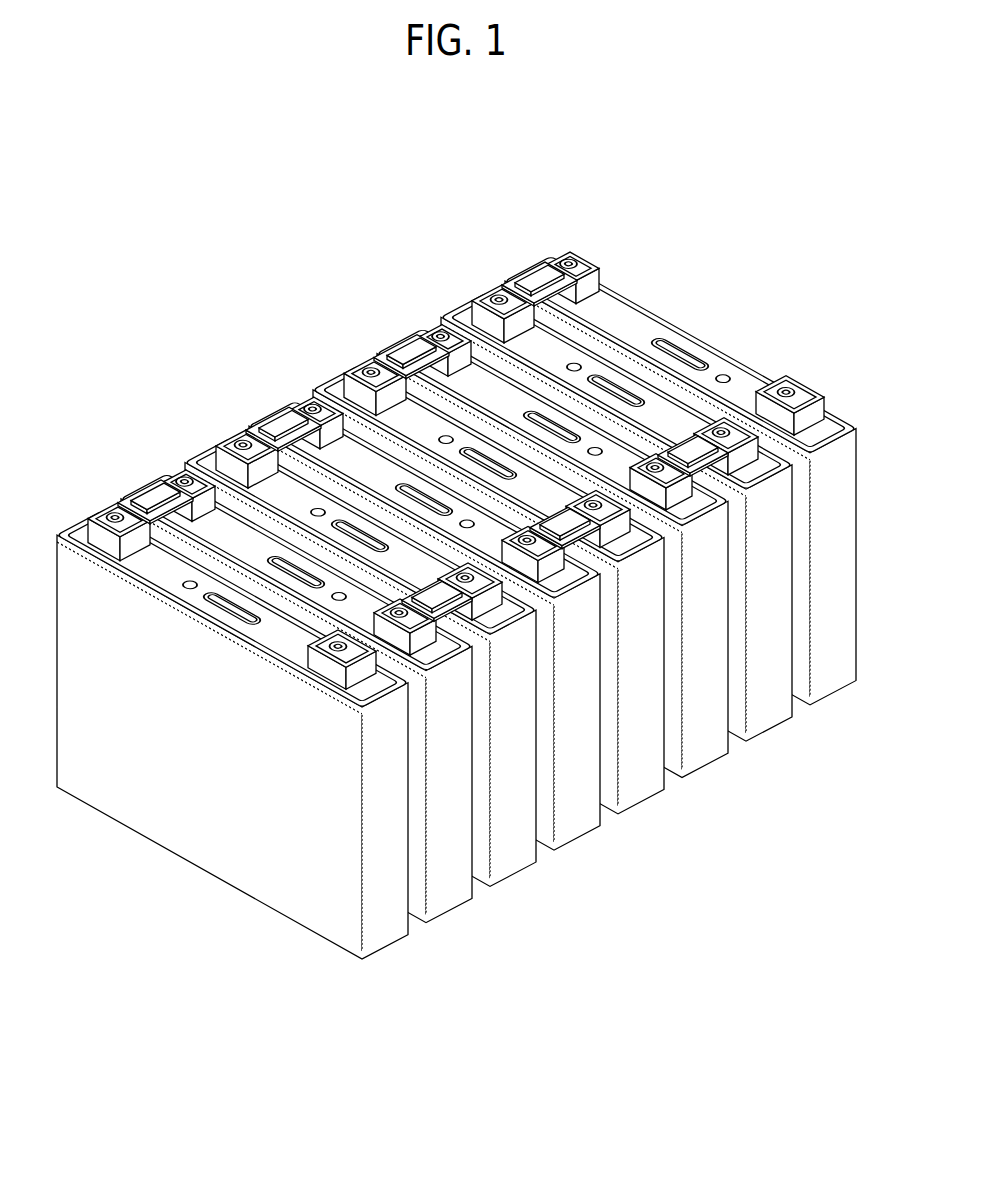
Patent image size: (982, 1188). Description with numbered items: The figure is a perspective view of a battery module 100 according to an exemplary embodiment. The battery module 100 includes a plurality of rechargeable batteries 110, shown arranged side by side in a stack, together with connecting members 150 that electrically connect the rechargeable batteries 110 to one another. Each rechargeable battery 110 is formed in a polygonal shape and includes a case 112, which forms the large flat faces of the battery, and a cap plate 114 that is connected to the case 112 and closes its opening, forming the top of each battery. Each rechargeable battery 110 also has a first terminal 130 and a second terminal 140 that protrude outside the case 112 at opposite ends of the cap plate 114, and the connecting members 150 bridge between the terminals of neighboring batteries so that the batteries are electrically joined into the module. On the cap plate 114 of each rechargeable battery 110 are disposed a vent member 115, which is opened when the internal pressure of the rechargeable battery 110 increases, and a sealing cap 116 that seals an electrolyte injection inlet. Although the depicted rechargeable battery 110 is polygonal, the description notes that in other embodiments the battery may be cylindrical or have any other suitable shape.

The battery module 100 is at (456, 600).
The rechargeable battery 110 is at (232, 756).
The case 112 is at (209, 747).
The cap plate 114 is at (232, 609).
The vent member 115 is at (233, 620).
The sealing cap 116 is at (188, 595).
The first terminal 130 is at (106, 516).
The second terminal 140 is at (178, 472).
The connecting member 150 is at (150, 503).